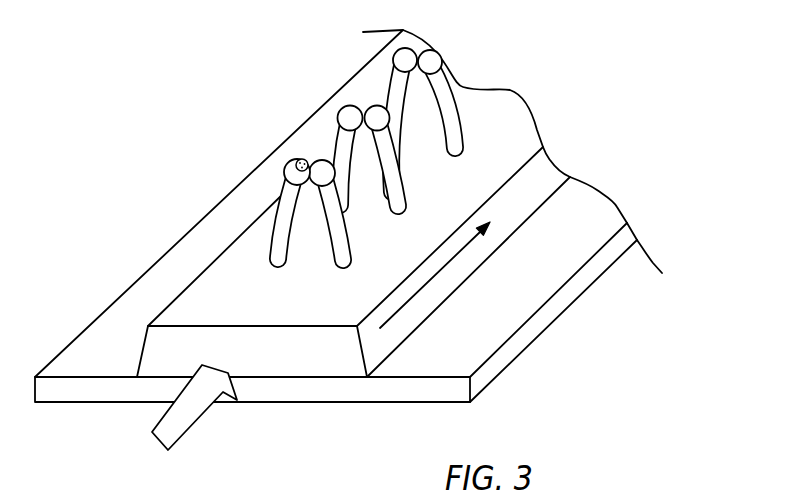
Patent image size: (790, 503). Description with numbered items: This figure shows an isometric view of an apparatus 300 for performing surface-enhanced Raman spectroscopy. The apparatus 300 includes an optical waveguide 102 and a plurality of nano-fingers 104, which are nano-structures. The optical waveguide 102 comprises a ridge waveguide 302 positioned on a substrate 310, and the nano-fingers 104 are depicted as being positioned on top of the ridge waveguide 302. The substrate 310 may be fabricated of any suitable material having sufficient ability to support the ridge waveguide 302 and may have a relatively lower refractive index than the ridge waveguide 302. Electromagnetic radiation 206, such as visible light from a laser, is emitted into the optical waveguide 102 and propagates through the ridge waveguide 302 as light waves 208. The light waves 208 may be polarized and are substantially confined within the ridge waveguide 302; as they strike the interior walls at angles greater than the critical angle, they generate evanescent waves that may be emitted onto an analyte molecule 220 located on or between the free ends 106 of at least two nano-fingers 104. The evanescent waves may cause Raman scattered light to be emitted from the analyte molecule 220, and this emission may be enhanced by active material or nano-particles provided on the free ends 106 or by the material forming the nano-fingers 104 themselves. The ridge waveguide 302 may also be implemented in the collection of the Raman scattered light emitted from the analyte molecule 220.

The apparatus 300 is at (130, 50).
The optical waveguide 102 is at (108, 220).
The nano-fingers 104 is at (279, 202).
The free ends 106 is at (284, 169).
The analyte molecule 220 is at (302, 159).
The ridge waveguide 302 is at (182, 294).
The light wave 208 is at (450, 267).
The electromagnetic radiation 206 is at (197, 411).
The substrate 310 is at (369, 403).